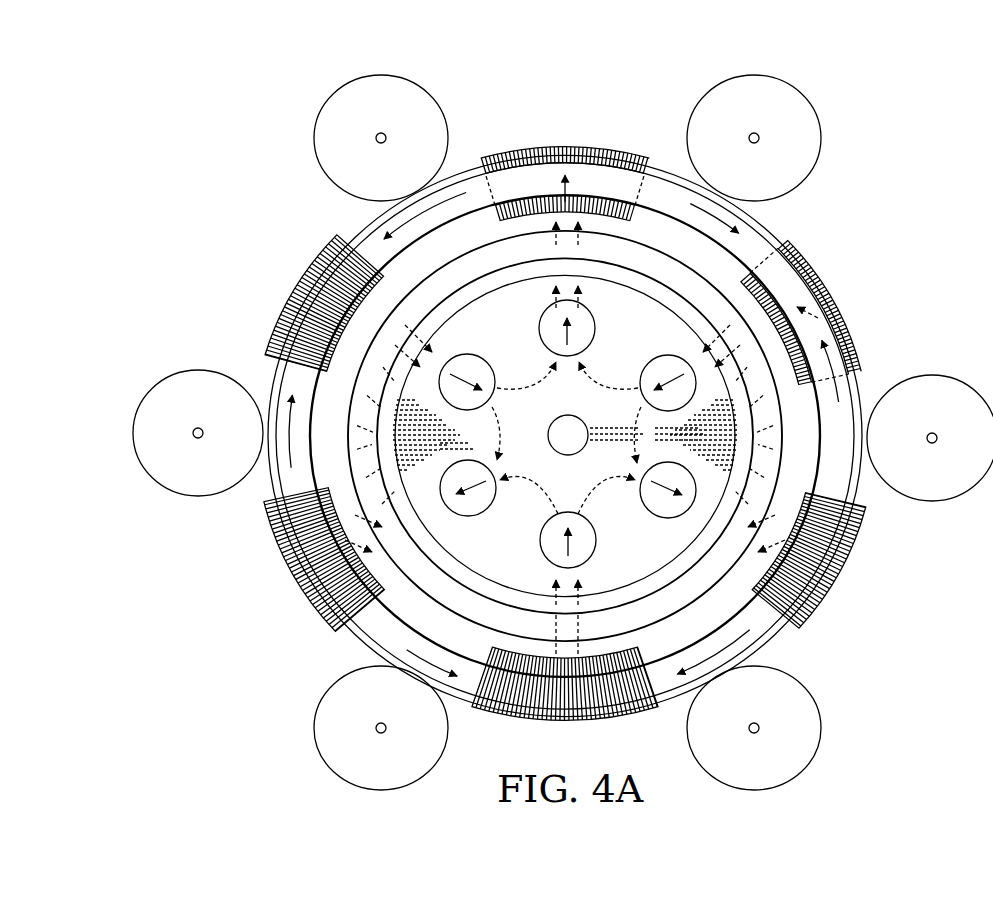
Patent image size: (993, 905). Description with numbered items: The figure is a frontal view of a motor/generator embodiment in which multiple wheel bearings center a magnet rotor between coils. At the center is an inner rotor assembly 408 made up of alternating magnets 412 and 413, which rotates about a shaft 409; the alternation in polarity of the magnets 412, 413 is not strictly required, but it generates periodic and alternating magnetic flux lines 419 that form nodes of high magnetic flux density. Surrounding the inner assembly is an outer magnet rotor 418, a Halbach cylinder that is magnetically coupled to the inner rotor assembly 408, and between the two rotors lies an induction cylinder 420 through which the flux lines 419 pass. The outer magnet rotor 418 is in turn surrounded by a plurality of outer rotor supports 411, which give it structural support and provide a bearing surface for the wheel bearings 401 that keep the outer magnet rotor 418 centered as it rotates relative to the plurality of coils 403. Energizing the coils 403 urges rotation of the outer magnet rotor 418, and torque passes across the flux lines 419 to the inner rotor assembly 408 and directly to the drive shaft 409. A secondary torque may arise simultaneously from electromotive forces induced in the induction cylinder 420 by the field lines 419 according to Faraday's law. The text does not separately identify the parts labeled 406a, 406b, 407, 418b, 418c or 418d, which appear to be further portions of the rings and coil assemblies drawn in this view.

The wheel bearings 401 is at (198, 497).
The coils 403 is at (853, 567).
The inner ring 406a is at (670, 572).
The intermediate ring 406b is at (460, 287).
The ring track 407 is at (600, 236).
The inner rotor assembly 408 is at (590, 408).
The shaft 409 is at (548, 437).
The outer rotor supports 411 is at (372, 222).
The magnets 412 is at (595, 333).
The magnets 413 is at (630, 433).
The outer magnet rotor 418 is at (850, 492).
The coil assembly 418b is at (598, 172).
The coil assembly 418c is at (837, 291).
The coil winding 418d is at (815, 262).
The magnetic flux lines 419 is at (860, 318).
The induction cylinder 420 is at (765, 630).